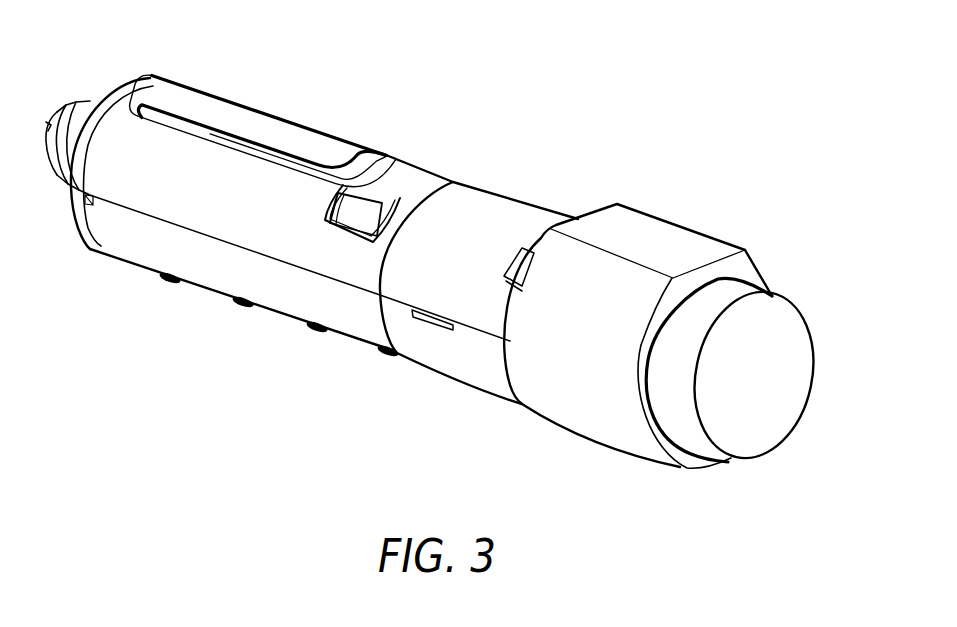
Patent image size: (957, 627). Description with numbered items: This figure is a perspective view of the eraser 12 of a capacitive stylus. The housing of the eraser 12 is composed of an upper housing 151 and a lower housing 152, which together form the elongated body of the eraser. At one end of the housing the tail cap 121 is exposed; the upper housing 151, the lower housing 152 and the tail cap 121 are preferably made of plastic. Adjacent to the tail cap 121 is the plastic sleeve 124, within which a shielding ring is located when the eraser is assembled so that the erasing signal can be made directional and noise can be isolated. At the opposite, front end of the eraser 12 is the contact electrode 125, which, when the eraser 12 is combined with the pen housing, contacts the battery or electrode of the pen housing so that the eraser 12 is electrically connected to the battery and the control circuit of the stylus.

The eraser 12 is at (420, 158).
The tail cap 121 is at (793, 383).
The plastic sleeve 124 is at (660, 242).
The contact electrode 125 is at (63, 112).
The upper housing 151 is at (518, 210).
The lower housing 152 is at (463, 370).